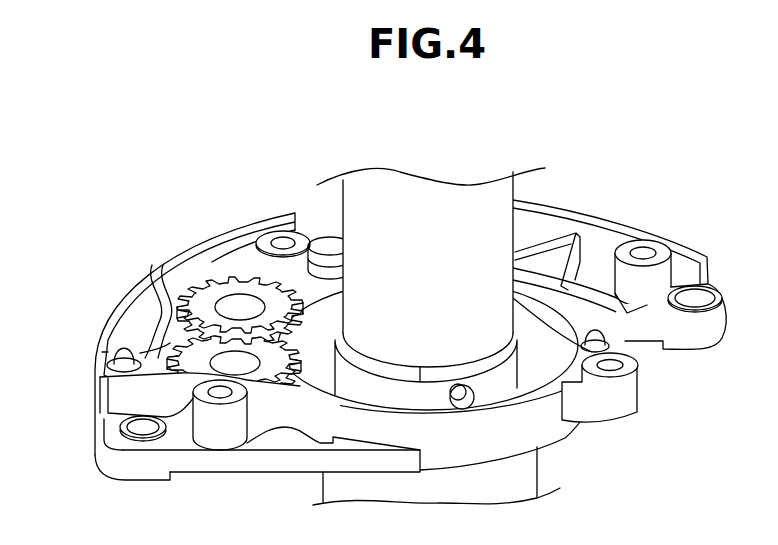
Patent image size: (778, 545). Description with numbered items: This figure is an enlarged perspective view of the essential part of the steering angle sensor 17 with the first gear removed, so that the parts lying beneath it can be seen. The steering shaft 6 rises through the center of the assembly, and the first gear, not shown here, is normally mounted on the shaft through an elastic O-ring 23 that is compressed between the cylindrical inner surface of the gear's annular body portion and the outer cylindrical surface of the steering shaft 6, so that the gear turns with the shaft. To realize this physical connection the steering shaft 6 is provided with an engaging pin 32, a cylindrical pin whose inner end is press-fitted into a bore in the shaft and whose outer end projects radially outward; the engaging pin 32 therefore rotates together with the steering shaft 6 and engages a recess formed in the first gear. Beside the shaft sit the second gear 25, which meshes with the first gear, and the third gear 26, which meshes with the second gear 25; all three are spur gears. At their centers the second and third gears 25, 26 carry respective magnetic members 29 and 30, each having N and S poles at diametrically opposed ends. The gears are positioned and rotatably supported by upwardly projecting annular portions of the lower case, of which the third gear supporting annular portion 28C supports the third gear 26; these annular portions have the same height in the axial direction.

The steering shaft 6 is at (393, 225).
The steering angle sensor 17 is at (527, 148).
The elastic O-ring 23 is at (428, 366).
The second gear 25 is at (200, 340).
The third gear 26 is at (200, 300).
The third gear supporting annular portion 28C is at (237, 303).
The magnetic member 29 is at (190, 378).
The magnetic member 30 is at (202, 302).
The engaging pin 32 is at (476, 394).